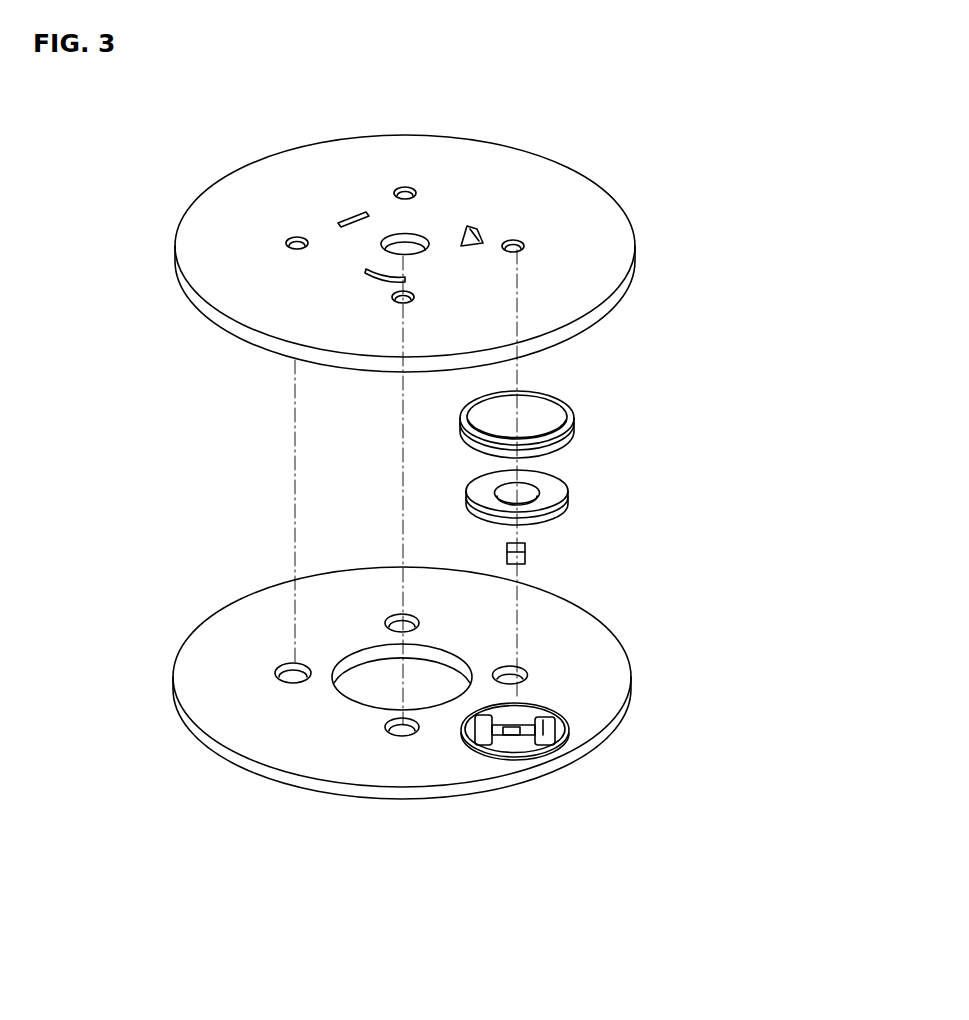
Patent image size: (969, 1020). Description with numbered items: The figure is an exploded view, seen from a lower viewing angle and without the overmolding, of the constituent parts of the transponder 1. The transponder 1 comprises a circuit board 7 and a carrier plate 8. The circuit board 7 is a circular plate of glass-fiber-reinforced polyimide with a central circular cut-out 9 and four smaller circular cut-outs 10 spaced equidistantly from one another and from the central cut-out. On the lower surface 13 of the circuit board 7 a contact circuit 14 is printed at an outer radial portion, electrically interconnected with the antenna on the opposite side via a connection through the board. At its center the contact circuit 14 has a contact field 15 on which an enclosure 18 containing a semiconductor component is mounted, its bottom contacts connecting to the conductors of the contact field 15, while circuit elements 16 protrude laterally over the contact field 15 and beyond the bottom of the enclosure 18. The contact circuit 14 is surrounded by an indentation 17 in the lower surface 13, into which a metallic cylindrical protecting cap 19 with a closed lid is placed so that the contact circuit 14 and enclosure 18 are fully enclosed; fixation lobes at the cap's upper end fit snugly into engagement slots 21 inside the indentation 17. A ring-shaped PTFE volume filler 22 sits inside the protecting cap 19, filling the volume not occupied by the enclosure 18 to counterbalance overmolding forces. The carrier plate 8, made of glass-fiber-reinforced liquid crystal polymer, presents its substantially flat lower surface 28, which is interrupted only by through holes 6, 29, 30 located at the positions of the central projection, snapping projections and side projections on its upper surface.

The transponder 1 is at (82, 485).
The through hole 6 is at (393, 237).
The circuit board 7 is at (478, 656).
The carrier plate 8 is at (479, 253).
The central circular cut-out 9 is at (332, 625).
The smaller circular cut-outs 10 is at (443, 692).
The lower surface 13 is at (402, 656).
The contact circuit 14 is at (574, 688).
The contact field 15 is at (515, 734).
The circuit elements 16 is at (563, 714).
The indentation 17 is at (577, 724).
The enclosure 18 is at (595, 538).
The protecting cap 19 is at (572, 424).
The engagement slots 21 is at (503, 697).
The volume filler 22 is at (575, 495).
The lower surface 28 is at (436, 253).
The through holes 29 is at (458, 228).
The through holes 30 is at (355, 224).